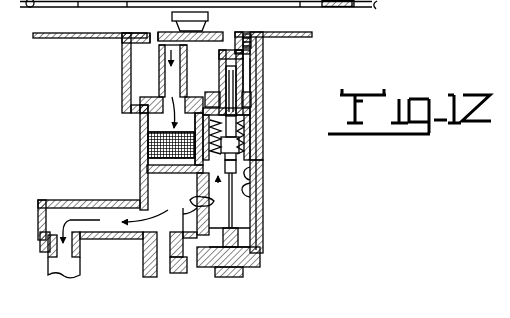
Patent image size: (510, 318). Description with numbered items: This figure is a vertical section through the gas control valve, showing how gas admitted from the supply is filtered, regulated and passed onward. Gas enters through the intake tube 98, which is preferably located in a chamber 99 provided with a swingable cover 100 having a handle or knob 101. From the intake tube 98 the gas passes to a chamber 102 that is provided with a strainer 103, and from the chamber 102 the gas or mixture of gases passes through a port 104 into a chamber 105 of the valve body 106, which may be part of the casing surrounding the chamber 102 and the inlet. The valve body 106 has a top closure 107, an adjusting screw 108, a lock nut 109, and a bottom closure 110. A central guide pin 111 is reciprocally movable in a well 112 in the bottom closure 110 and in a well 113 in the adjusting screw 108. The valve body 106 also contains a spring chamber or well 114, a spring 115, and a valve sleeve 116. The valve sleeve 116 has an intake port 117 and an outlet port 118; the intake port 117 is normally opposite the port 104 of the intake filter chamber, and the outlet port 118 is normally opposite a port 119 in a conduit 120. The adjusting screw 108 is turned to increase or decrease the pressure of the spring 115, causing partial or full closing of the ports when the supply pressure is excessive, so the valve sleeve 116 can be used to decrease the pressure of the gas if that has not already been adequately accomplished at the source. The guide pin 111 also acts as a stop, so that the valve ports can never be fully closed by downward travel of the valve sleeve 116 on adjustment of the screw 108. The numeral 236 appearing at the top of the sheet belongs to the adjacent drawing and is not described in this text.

The intake tube 98 is at (160, 82).
The chamber 99 is at (133, 66).
The swingable cover 100 is at (152, 34).
The handle or knob 101 is at (208, 13).
The chamber 102 is at (148, 141).
The strainer 103 is at (146, 162).
The port 104 is at (171, 141).
The chamber 105 is at (263, 191).
The valve body 106 is at (266, 209).
The top closure 107 is at (262, 96).
The adjusting screw 108 is at (240, 63).
The lock nut 109 is at (244, 89).
The bottom closure 110 is at (262, 262).
The central guide pin 111 is at (232, 92).
The well 112 is at (264, 241).
The well 113 is at (227, 70).
The spring chamber or well 114 is at (262, 120).
The spring 115 is at (258, 143).
The valve sleeve 116 is at (256, 159).
The intake port 117 is at (257, 173).
The outlet port 118 is at (198, 199).
The port 119 is at (197, 207).
The conduit 120 is at (79, 218).
The component of adjacent figure 236 is at (387, 11).